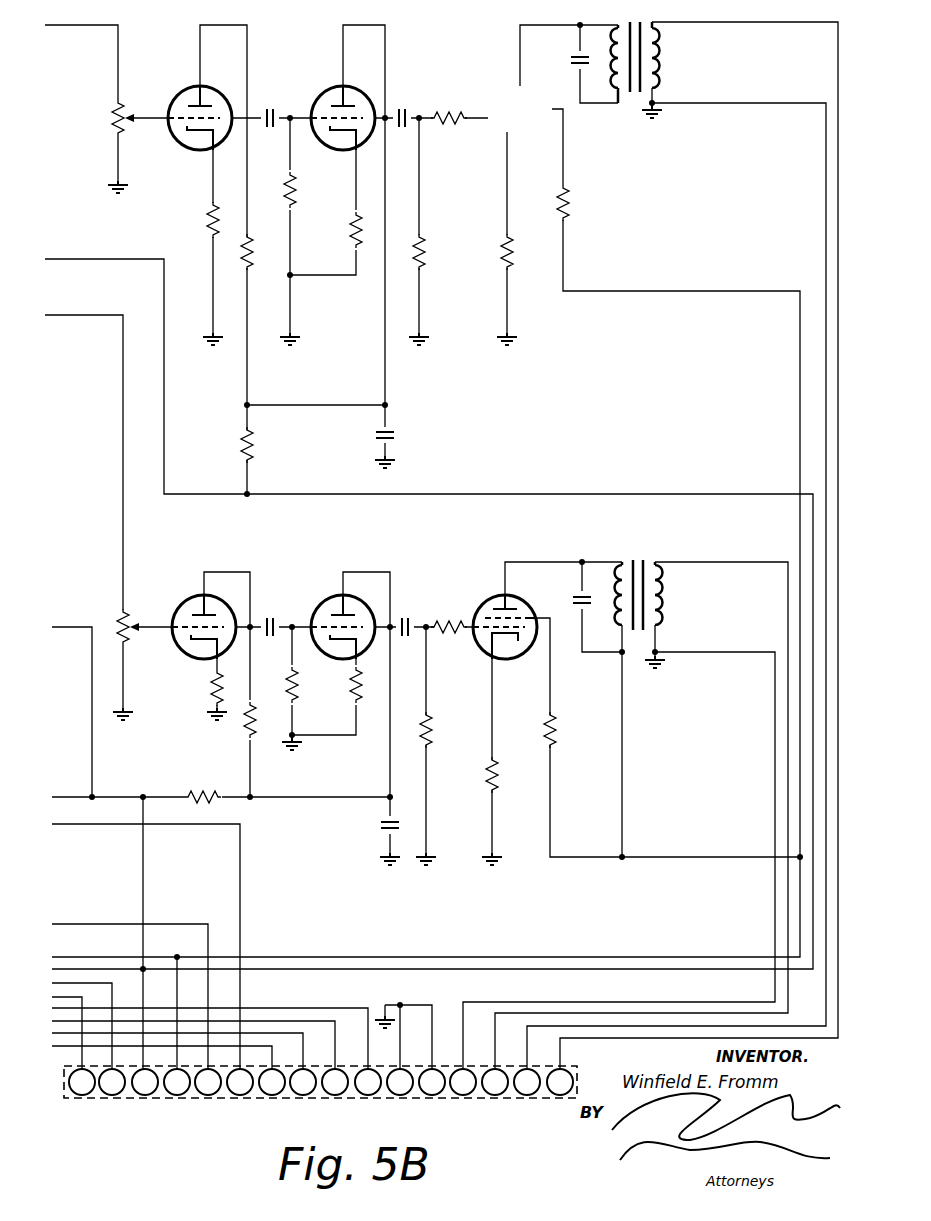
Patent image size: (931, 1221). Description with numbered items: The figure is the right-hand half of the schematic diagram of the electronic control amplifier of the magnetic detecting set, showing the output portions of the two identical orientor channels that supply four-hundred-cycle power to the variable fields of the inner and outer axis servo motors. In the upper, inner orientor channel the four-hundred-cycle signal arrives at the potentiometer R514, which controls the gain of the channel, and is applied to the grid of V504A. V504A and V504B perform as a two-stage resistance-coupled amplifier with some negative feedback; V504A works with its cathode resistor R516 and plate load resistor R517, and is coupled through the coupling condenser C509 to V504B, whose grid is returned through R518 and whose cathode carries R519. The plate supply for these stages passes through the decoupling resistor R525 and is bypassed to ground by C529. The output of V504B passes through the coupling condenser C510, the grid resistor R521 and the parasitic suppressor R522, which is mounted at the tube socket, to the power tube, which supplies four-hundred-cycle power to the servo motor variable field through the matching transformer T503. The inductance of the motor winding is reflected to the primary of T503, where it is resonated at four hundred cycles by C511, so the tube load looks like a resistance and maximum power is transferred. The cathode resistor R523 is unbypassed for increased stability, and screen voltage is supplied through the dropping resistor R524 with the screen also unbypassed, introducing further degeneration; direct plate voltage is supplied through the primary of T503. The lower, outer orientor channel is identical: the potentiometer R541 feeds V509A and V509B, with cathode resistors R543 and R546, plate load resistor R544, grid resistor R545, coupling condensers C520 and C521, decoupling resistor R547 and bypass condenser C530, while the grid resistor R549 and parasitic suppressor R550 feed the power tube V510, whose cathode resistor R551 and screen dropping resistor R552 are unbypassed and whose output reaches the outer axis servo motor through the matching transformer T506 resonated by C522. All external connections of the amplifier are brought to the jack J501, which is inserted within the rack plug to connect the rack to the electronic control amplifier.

The potentiometer R514 is at (92, 118).
The first triode section of V504 V504A is at (189, 108).
The coupling condenser C509 is at (272, 105).
The second triode section of V504 V504B is at (350, 108).
The coupling condenser C510 is at (411, 105).
The parasitic suppressor resistor R522 is at (447, 128).
The resonating condenser C511 is at (562, 61).
The matching transformer T503 is at (655, 62).
The cathode resistor of V504A R516 is at (193, 220).
The plate load resistor of V504A R517 is at (268, 252).
The grid resistor of V504B R518 is at (312, 190).
The cathode resistor of V504B R519 is at (335, 230).
The grid resistor of V505 R521 is at (442, 252).
The cathode resistor of V505 R523 is at (529, 252).
The screen dropping resistor R524 is at (587, 203).
The decoupling resistor R525 is at (271, 445).
The bypass condenser C529 is at (411, 433).
The potentiometer R541 is at (101, 626).
The first triode section of V509 V509A is at (214, 618).
The coupling condenser C520 is at (273, 615).
The second triode section of V509 V509B is at (353, 618).
The coupling condenser C521 is at (417, 617).
The parasitic suppressor resistor R550 is at (451, 640).
The power tube V510 is at (511, 617).
The resonating condenser C522 is at (565, 599).
The matching transformer T506 is at (639, 584).
The cathode resistor of V509A R543 is at (194, 688).
The plate load resistor of V509A R544 is at (270, 720).
The grid resistor of V509B R545 is at (312, 685).
The cathode resistor of V509B R546 is at (337, 696).
The grid resistor of V510 R549 is at (447, 730).
The cathode resistor of V510 R551 is at (513, 775).
The screen dropping resistor R552 is at (572, 730).
The decoupling resistor R547 is at (203, 785).
The bypass condenser C530 is at (368, 825).
The jack J501 is at (320, 1091).